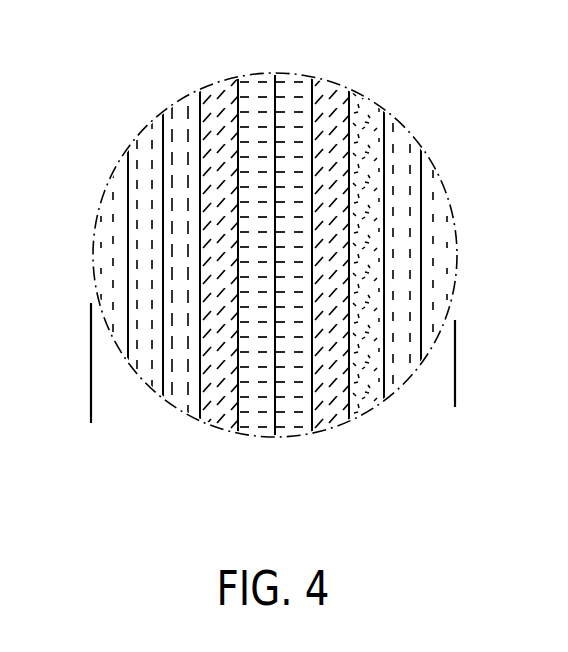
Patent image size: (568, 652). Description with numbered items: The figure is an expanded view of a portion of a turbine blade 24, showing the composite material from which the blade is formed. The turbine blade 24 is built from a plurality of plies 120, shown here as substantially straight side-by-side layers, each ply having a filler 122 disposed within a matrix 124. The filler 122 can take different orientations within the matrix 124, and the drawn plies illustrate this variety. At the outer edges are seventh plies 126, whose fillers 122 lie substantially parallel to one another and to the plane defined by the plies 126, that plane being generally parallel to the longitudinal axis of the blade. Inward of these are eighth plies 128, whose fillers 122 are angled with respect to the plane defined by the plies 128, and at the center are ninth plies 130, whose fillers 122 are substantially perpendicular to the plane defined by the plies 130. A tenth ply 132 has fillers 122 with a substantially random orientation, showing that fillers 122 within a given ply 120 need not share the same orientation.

The turbine blade 24 is at (450, 57).
The plies 120 is at (148, 120).
The filler 122 is at (152, 170).
The matrix 124 is at (148, 238).
The seventh plies 126 is at (200, 433).
The eighth plies 128 is at (219, 427).
The ninth plies 130 is at (308, 444).
The tenth ply 132 is at (363, 420).